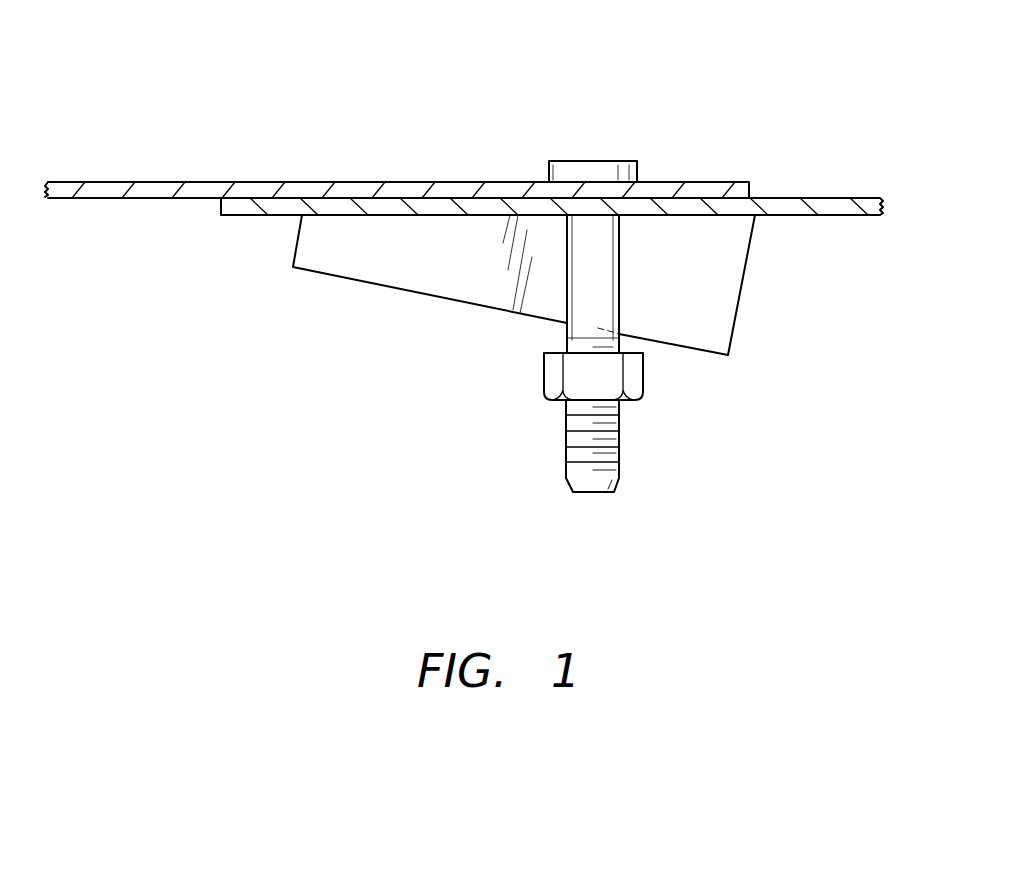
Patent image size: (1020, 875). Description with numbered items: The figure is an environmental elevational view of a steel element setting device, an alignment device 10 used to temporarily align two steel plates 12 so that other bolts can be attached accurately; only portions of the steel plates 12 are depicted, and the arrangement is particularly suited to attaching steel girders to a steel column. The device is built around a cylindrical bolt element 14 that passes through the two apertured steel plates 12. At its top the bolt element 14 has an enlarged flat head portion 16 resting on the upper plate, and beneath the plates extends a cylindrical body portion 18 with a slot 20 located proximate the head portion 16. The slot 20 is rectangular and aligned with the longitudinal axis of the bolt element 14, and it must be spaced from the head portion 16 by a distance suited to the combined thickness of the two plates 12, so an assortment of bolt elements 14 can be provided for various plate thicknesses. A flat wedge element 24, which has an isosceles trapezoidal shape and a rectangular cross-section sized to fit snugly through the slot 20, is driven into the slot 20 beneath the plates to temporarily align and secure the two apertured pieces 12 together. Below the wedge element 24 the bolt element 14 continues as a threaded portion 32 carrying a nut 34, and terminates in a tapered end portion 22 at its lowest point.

The alignment device 10 is at (404, 322).
The steel plates 12 is at (154, 182).
The bolt element 14 is at (632, 124).
The head portion 16 is at (573, 160).
The body portion 18 is at (606, 279).
The slot 20 is at (583, 326).
The tapered end portion 22 is at (572, 487).
The wedge element 24 is at (694, 254).
The threaded portion 32 is at (620, 440).
The nut 34 is at (552, 382).